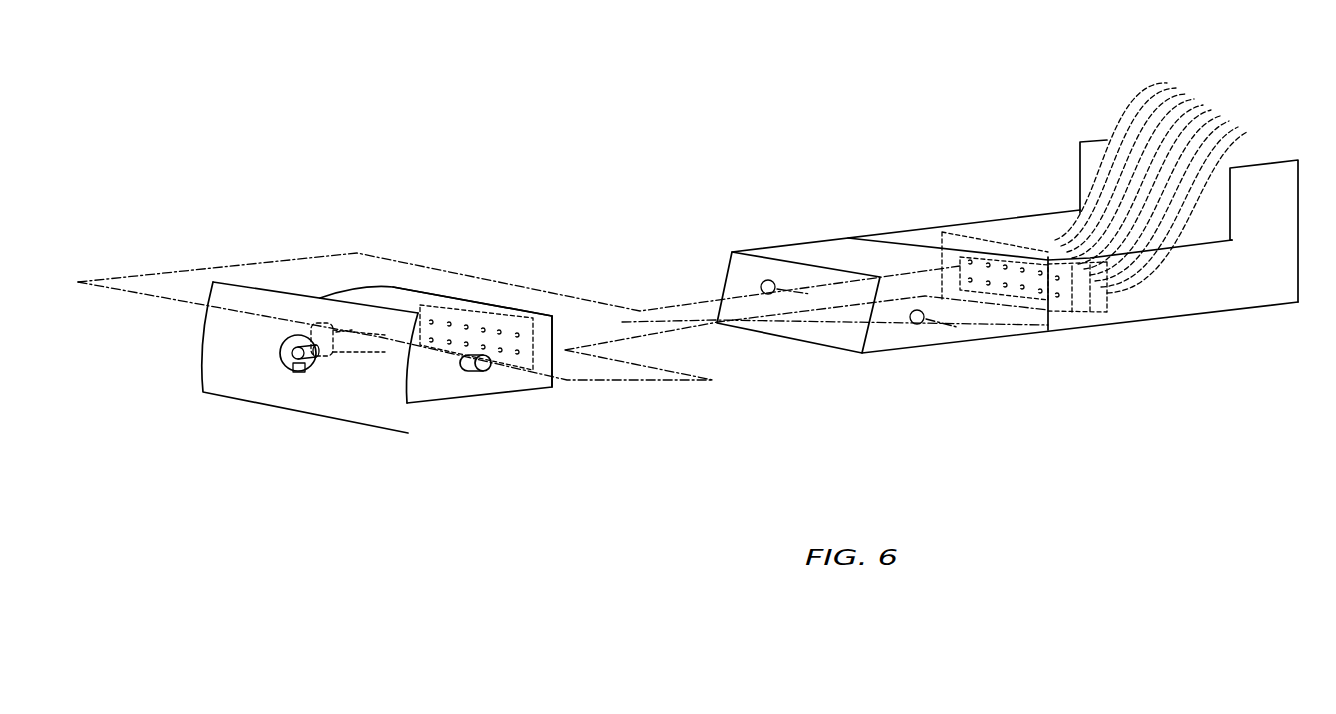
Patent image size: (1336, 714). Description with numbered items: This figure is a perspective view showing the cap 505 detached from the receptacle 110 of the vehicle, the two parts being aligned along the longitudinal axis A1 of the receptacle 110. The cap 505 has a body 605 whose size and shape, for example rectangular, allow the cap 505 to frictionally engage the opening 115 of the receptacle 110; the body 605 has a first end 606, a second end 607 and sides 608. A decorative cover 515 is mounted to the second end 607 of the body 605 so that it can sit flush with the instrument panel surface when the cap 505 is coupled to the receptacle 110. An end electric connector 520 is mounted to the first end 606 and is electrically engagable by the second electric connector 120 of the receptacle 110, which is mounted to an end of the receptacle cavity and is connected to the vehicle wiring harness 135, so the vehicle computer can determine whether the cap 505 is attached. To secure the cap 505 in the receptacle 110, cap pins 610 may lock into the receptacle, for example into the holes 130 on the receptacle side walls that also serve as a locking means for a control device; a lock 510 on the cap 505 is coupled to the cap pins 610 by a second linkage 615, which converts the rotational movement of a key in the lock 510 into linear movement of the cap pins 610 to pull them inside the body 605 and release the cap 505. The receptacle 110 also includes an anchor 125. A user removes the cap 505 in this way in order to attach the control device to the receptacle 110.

The cap 505 is at (376, 320).
The lock 510 is at (283, 350).
The decorative cover 515 is at (373, 407).
The end electric connector 520 is at (449, 314).
The body 605 is at (367, 290).
The first end 606 is at (553, 333).
The second end 607 is at (413, 412).
The sides 608 is at (538, 326).
The cap pin 610 is at (310, 327).
The second linkage 615 is at (350, 337).
The receptacle 110 is at (993, 219).
The opening 115 is at (845, 330).
The second electric connector 120 is at (1082, 288).
The anchor 125 is at (1185, 288).
The hole 130 is at (762, 281).
The wiring harness 135 is at (1138, 85).
The longitudinal axis A1 is at (563, 316).